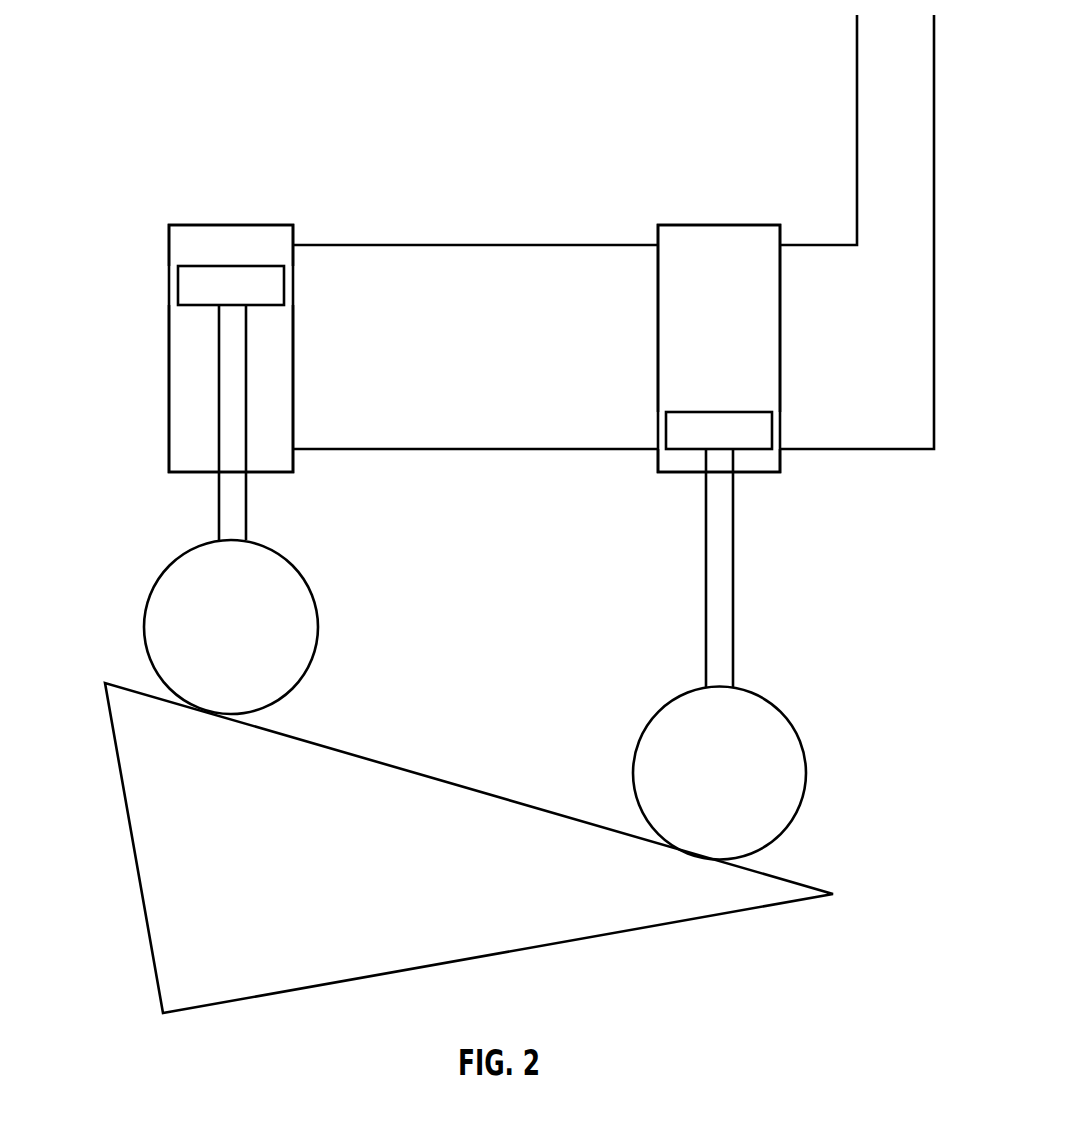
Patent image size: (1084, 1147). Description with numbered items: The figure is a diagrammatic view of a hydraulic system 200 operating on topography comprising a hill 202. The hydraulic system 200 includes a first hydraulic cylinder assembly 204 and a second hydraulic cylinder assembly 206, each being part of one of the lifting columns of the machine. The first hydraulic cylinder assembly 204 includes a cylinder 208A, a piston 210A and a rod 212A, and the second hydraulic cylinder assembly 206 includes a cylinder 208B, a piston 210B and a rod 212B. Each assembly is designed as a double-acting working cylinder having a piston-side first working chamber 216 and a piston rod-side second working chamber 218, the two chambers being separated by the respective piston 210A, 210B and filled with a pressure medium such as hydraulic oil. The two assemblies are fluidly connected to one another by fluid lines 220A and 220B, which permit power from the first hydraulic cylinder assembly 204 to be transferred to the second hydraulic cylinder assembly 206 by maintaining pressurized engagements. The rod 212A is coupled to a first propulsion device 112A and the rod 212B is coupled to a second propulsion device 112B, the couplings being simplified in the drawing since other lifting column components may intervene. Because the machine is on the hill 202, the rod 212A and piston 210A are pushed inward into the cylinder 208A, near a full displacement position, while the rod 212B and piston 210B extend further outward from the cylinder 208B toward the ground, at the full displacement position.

The hydraulic system 200 is at (200, 90).
The hill 202 is at (332, 858).
The first hydraulic cylinder assembly 204 is at (672, 210).
The second hydraulic cylinder assembly 206 is at (187, 210).
The cylinder 208A is at (657, 348).
The cylinder 208B is at (168, 348).
The piston 210A is at (677, 432).
The piston 210B is at (270, 287).
The rod 212A is at (722, 557).
The rod 212B is at (227, 500).
The first working chamber 216 is at (235, 232).
The second working chamber 218 is at (182, 410).
The fluid line 220A is at (476, 245).
The fluid line 220B is at (475, 452).
The first propulsion device 112A is at (632, 770).
The second propulsion device 112B is at (318, 625).